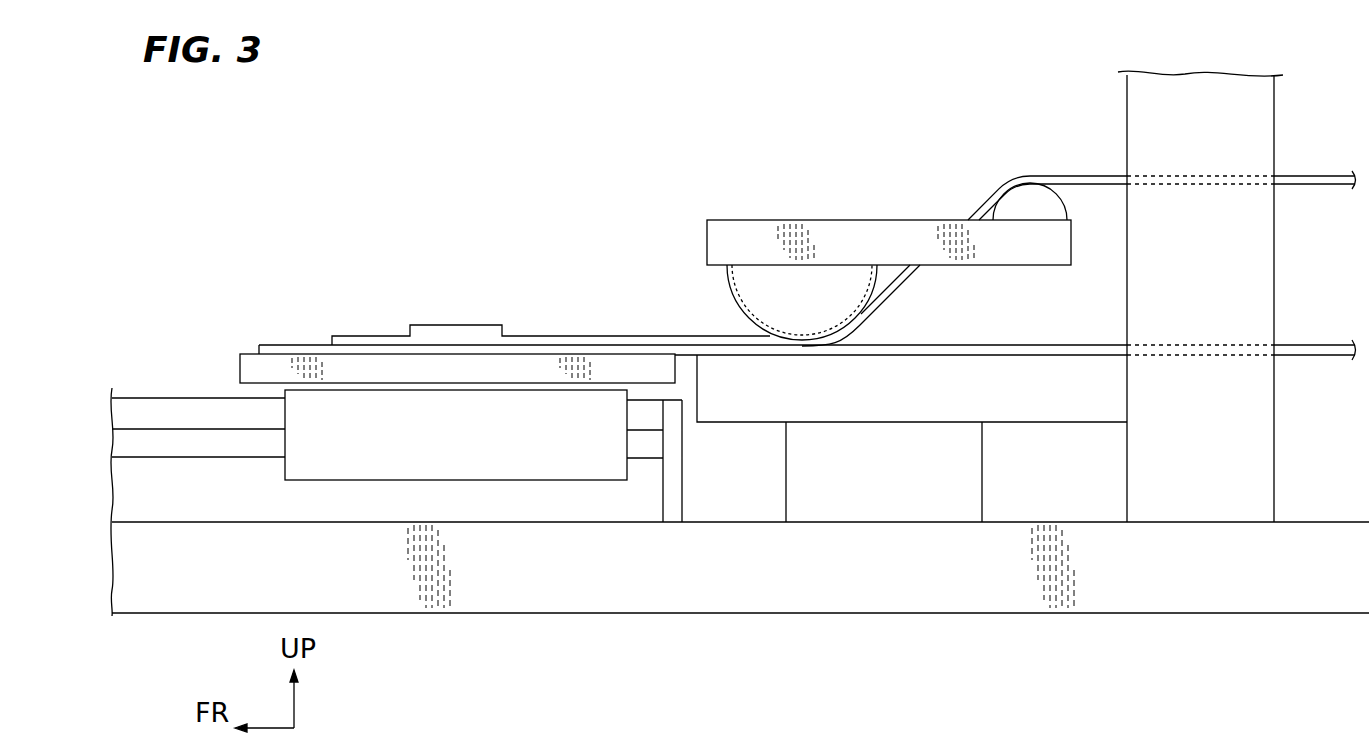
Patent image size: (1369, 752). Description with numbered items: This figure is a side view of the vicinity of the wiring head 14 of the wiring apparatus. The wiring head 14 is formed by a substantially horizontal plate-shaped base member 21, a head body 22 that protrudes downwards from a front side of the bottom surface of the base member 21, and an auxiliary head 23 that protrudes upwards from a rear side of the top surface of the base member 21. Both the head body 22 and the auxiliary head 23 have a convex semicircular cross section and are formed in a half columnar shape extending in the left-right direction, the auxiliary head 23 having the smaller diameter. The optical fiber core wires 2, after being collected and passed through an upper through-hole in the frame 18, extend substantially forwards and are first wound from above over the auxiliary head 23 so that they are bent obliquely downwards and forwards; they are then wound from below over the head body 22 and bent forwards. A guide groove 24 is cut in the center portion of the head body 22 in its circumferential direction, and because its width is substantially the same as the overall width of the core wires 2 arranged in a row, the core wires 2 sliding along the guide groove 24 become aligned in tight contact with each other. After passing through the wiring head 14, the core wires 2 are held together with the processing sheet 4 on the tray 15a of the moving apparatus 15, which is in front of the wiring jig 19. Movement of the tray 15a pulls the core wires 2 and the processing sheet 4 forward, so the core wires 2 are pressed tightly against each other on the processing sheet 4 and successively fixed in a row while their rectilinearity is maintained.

The optical fiber core wires 2 is at (1322, 176).
The processing sheet 4 is at (1313, 345).
The wiring head 14 is at (857, 229).
The moving apparatus 15 is at (441, 401).
The tray 15a is at (240, 354).
The frame 18 is at (1277, 97).
The wiring jig 19 is at (1040, 425).
The base member 21 is at (743, 220).
The head body 22 is at (728, 283).
The auxiliary head 23 is at (1062, 201).
The guide groove 24 is at (742, 309).